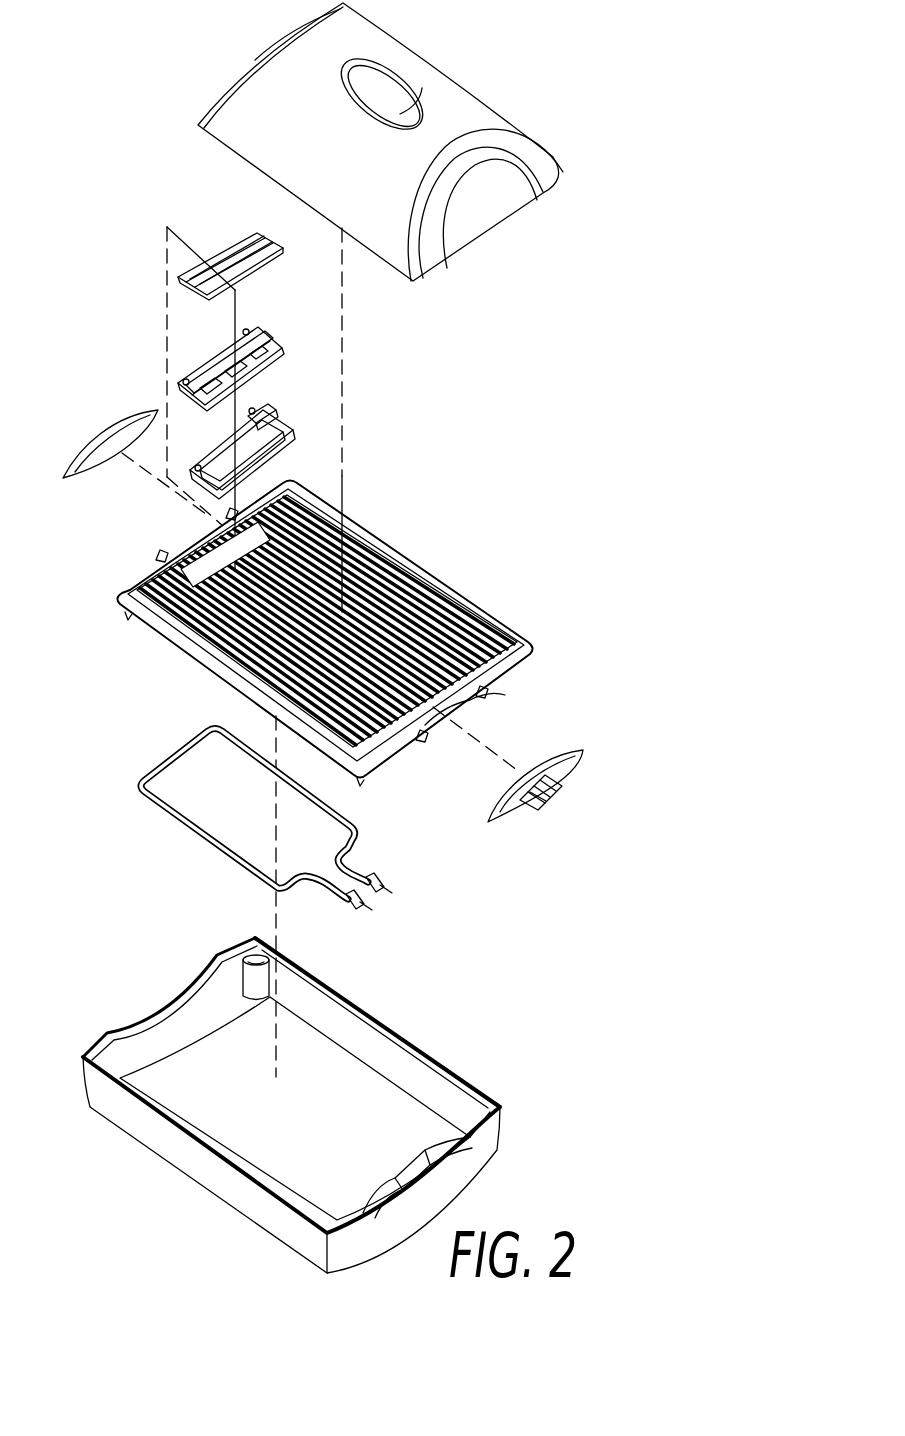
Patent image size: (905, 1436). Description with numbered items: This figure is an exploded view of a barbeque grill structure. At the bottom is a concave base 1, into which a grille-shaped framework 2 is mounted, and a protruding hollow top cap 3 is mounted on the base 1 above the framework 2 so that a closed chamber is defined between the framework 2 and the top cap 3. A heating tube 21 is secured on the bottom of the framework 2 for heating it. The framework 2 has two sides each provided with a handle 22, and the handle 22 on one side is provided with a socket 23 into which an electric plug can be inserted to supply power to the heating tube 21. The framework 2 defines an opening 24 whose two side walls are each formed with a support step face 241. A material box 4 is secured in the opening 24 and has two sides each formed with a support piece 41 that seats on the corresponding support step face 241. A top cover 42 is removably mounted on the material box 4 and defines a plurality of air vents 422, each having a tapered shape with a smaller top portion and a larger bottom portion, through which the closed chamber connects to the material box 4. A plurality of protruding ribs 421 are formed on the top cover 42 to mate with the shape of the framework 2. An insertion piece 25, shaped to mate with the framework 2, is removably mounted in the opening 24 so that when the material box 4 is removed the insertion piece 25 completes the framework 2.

The concave base 1 is at (252, 1140).
The grille-shaped framework 2 is at (324, 611).
The heating tube 21 is at (197, 837).
The handle 22 is at (337, 610).
The socket 23 is at (547, 795).
The opening 24 is at (317, 500).
The support step face 241 is at (347, 527).
The insertion piece 25 is at (235, 252).
The protruding hollow top cap 3 is at (458, 122).
The material box 4 is at (311, 438).
The support piece 41 is at (287, 420).
The top cover 42 is at (265, 346).
The protruding ribs 421 is at (270, 338).
The air vents 422 is at (203, 370).